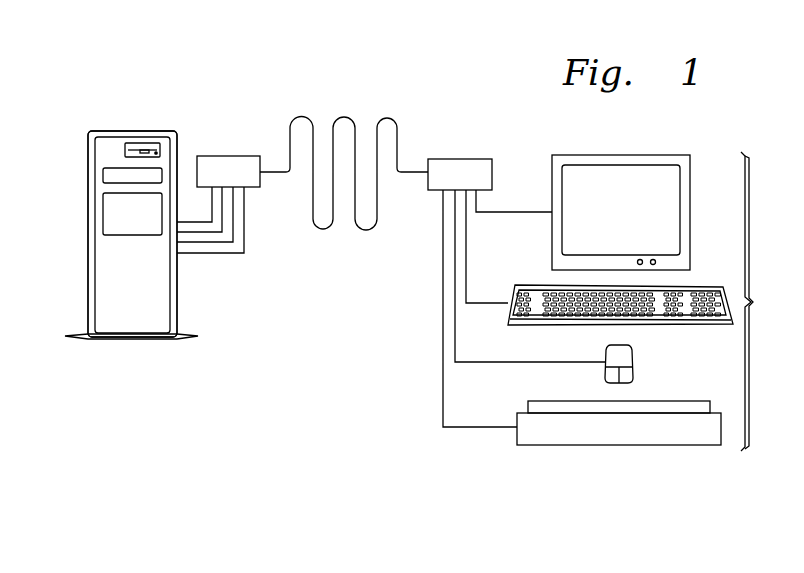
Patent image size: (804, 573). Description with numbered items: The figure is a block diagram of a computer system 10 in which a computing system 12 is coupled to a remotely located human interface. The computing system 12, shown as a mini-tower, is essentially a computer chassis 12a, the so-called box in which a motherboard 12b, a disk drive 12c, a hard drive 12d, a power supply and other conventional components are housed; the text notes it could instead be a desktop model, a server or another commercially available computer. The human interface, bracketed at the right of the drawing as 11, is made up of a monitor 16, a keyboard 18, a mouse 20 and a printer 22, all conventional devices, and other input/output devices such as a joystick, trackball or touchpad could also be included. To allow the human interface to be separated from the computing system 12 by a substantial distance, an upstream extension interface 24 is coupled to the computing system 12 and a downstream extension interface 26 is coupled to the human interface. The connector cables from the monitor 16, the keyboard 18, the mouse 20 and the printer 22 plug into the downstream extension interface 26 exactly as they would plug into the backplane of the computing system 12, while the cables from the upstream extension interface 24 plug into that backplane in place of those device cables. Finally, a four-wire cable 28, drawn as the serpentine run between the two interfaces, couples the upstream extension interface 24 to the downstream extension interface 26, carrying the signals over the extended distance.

The computer system 10 is at (214, 58).
The user terminal / client computer 11 is at (763, 301).
The computing system 12 is at (112, 362).
The computer chassis 12a is at (113, 131).
The motherboard 12b is at (143, 143).
The disk drive 12c is at (103, 176).
The hard drive 12d is at (103, 215).
The monitor 16 is at (637, 222).
The keyboard 18 is at (534, 285).
The mouse 20 is at (633, 372).
The printer 22 is at (617, 445).
The upstream extension interface 24 is at (227, 156).
The downstream extension interface 26 is at (460, 159).
The 4-wire cable 28 is at (283, 106).